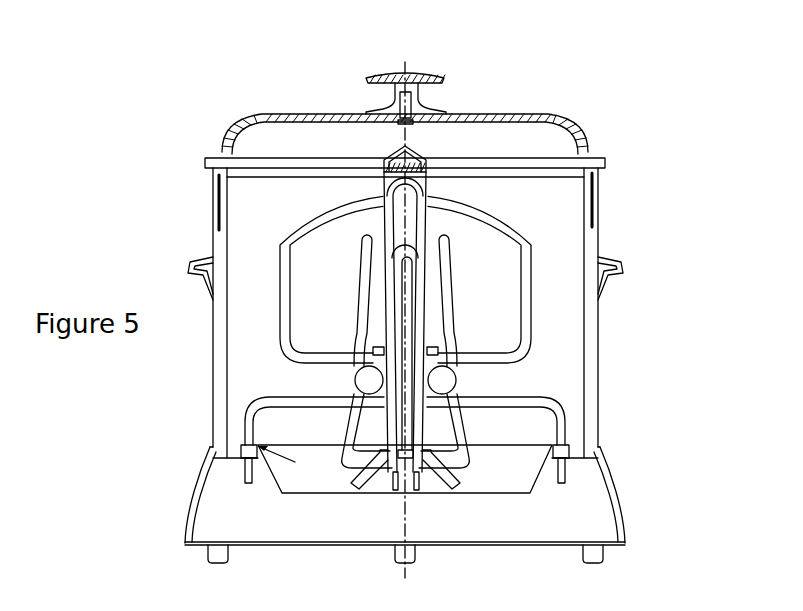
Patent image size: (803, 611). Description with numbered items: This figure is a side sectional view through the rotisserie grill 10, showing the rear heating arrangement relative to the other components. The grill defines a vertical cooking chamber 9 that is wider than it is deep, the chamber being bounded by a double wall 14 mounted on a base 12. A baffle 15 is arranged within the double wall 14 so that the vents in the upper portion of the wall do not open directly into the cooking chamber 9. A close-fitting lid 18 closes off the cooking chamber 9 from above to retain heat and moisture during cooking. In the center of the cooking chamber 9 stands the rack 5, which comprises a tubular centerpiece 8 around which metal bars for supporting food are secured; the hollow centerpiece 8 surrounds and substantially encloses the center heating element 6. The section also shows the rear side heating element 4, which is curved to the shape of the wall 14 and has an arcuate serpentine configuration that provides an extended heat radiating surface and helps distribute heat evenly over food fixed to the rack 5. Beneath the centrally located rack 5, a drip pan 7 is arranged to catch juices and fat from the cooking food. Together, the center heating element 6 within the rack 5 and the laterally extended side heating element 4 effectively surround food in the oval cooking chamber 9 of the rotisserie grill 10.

The rotisserie grill 10 is at (163, 182).
The cooking chamber 9 is at (256, 260).
The double wall 14 is at (602, 328).
The baffle 15 is at (597, 197).
The lid 18 is at (288, 113).
The tubular centerpiece 8 is at (430, 216).
The center heating element 6 is at (396, 286).
The rear side heating element 4 is at (497, 218).
The rack 5 is at (354, 382).
The drip pan 7 is at (257, 445).
The base 12 is at (623, 490).